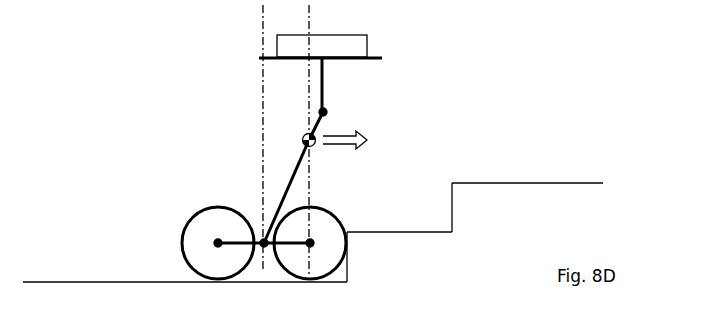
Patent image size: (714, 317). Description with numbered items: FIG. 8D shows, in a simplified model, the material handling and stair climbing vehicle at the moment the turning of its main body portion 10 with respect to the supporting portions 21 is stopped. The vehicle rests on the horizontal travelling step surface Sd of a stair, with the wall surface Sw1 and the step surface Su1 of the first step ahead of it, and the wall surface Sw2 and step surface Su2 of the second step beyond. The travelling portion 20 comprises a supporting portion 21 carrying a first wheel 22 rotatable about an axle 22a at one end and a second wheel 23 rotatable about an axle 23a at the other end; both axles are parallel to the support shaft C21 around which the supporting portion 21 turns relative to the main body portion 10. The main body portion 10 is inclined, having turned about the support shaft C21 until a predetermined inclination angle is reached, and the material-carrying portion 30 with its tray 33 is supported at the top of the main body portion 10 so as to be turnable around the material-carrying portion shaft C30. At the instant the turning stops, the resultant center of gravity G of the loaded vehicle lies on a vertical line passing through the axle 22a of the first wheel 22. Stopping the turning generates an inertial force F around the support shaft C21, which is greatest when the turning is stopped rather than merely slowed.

The main body portion 10 is at (290, 165).
The travelling portion 20 is at (231, 215).
The supporting portion 21 is at (222, 209).
The first wheel 22 is at (341, 213).
The axle 22a is at (312, 240).
The second wheel 23 is at (182, 244).
The axle 23a is at (215, 240).
The material-carrying portion 30 is at (252, 61).
The tray 33 is at (375, 56).
The support shaft C21 is at (263, 238).
The material-carrying portion shaft C30 is at (327, 111).
The resultant center of gravity G is at (303, 137).
The inertial force F is at (353, 141).
The travelling step surface Sd is at (103, 281).
The wall surface Sw1 is at (347, 272).
The step surface Su1 is at (423, 231).
The wall surface Sw2 is at (451, 208).
The step surface Su2 is at (487, 182).